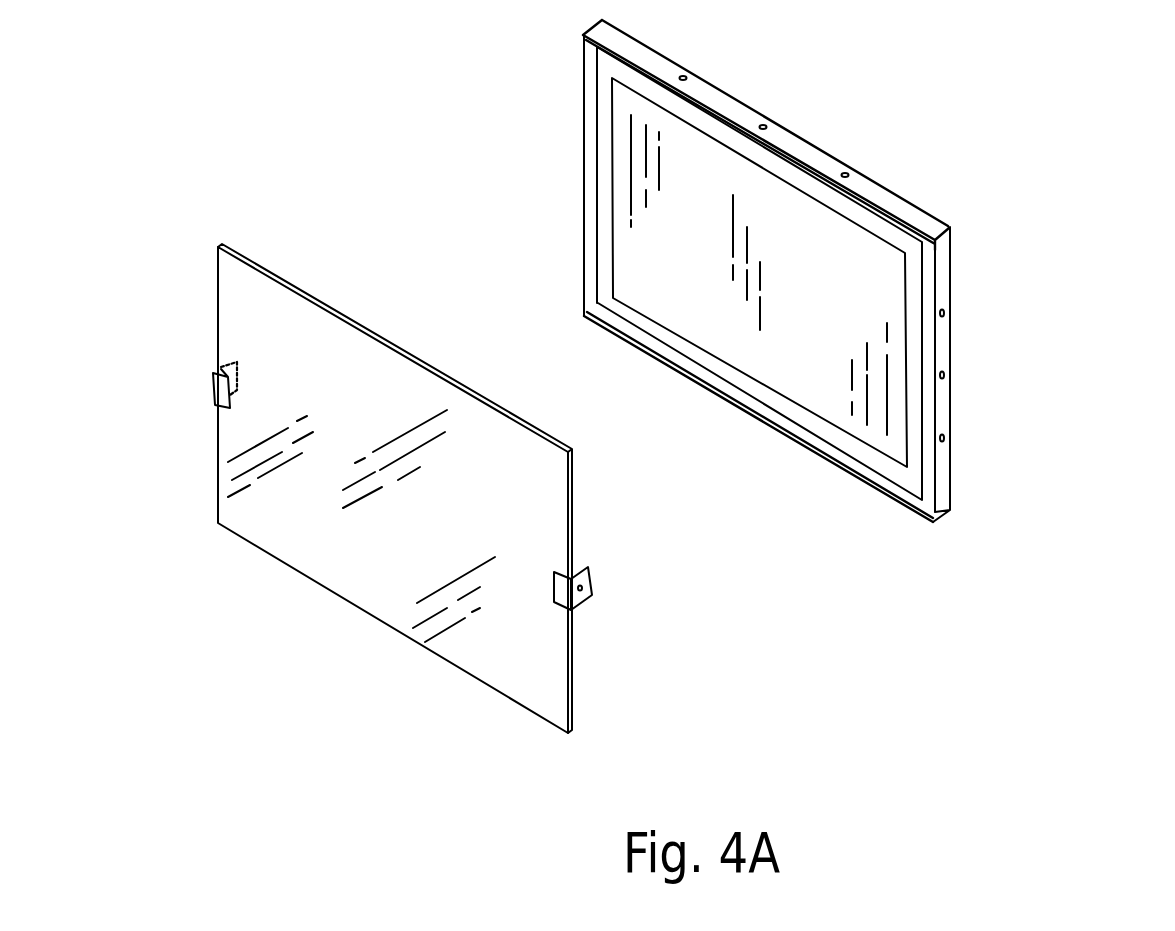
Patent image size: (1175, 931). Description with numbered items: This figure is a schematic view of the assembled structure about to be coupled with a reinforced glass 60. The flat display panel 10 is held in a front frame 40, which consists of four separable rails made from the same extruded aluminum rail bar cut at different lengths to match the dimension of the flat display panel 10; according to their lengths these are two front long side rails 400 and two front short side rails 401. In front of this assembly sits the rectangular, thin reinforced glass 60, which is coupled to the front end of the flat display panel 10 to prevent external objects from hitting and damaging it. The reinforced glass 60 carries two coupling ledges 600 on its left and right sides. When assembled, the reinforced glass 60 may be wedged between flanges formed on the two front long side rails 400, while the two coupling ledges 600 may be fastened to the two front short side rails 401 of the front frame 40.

The flat display panel 10 is at (647, 225).
The front frame 40 is at (867, 271).
The front long side rails 400 is at (812, 156).
The front short side rails 401 is at (947, 287).
The reinforced glass 60 is at (393, 630).
The coupling ledges 600 is at (215, 382).